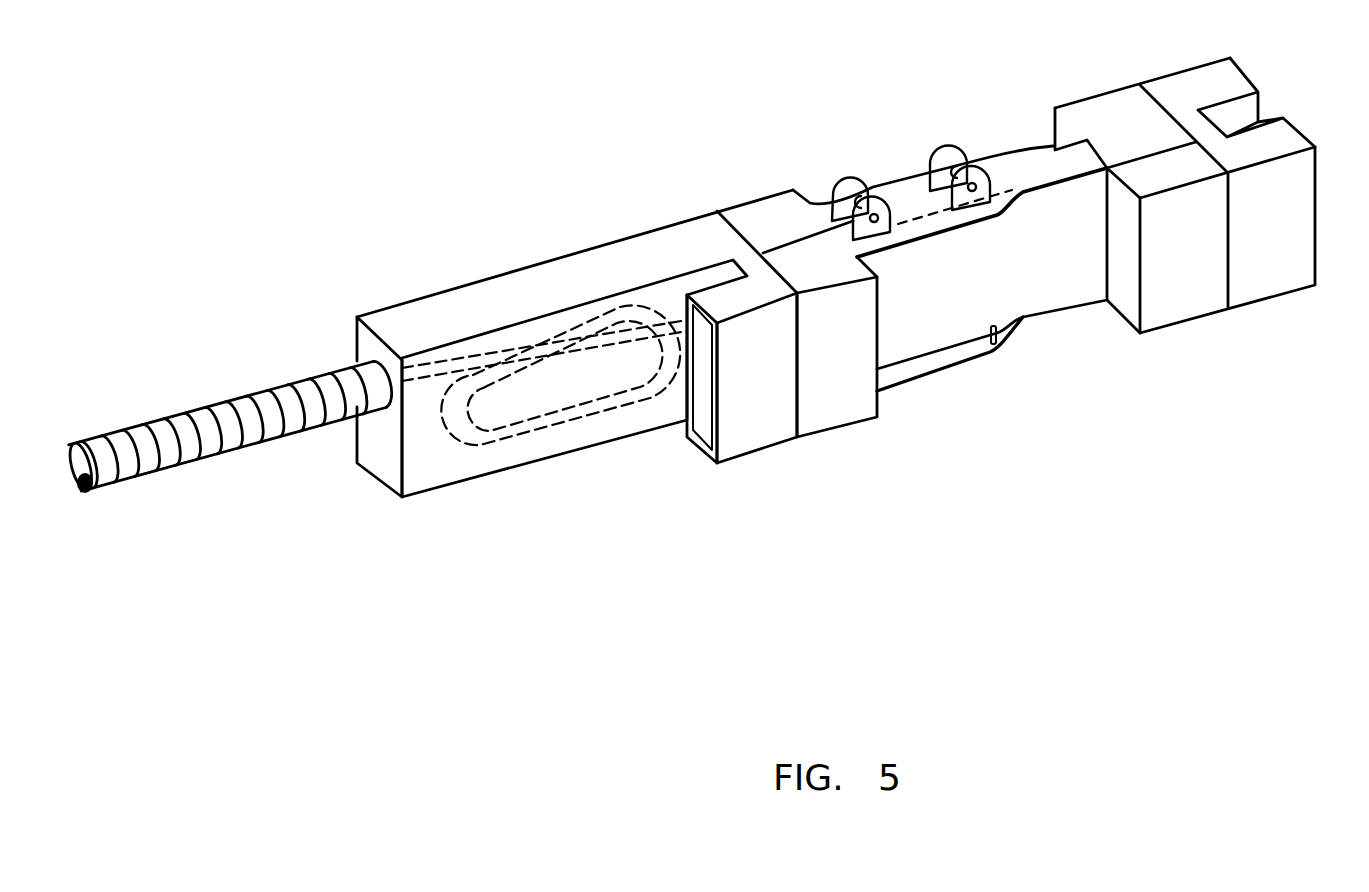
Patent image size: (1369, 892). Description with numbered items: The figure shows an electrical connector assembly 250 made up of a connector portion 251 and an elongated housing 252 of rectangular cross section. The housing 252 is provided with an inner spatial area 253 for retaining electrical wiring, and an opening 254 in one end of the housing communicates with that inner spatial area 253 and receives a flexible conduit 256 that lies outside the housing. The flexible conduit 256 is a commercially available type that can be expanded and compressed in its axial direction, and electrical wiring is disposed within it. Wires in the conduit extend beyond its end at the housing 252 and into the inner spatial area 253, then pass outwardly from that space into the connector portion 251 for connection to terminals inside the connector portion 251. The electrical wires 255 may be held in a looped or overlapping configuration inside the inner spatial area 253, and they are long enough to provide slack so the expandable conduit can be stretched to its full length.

The electrical connector assembly 250 is at (652, 230).
The connector portion 251 is at (773, 192).
The elongated housing 252 is at (515, 268).
The inner spatial area 253 is at (548, 442).
The opening 254 is at (400, 407).
The electrical wires 255 is at (637, 405).
The flexible conduit 256 is at (207, 408).